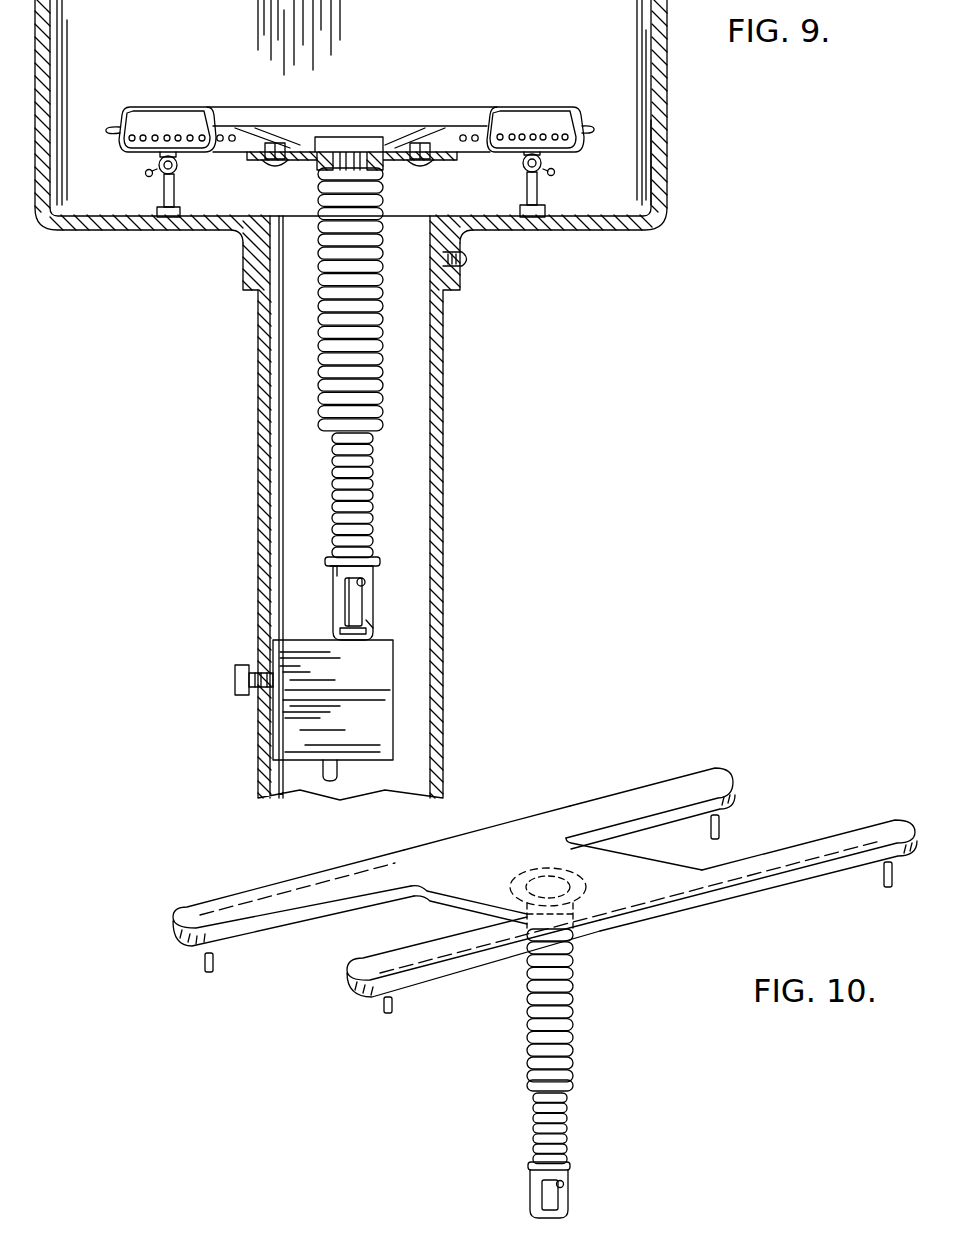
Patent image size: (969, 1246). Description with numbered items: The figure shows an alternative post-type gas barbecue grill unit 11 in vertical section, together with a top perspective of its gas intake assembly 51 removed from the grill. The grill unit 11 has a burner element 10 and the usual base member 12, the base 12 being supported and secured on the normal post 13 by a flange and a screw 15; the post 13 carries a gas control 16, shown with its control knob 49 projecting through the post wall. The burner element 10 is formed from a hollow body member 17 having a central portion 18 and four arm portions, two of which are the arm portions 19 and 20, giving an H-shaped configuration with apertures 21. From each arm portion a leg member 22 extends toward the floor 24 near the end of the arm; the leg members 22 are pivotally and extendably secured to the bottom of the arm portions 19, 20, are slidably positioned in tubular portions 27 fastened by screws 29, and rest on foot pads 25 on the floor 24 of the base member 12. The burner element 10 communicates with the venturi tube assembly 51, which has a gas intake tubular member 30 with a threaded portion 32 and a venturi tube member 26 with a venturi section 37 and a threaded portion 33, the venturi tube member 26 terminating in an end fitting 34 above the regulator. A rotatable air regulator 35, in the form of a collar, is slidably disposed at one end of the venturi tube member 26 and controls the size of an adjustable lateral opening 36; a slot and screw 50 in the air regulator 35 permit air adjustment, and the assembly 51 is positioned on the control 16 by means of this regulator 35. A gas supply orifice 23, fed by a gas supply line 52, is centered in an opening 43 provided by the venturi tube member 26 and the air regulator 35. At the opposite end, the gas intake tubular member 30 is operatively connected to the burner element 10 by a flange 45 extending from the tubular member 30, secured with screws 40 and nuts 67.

In FIG. 9, the burner element 10 is at (346, 162).
In FIG. 10, the burner element 10 is at (552, 894).
In FIG. 9, the gas barbecue grill unit 11 is at (674, 116).
In FIG. 9, the base member 12 is at (660, 167).
In FIG. 9, the post 13 is at (445, 390).
In FIG. 9, the screw 15 is at (466, 262).
In FIG. 9, the gas control 16 is at (395, 692).
In FIG. 9, the hollow body member 17 is at (563, 108).
In FIG. 9, the central portion 18 is at (455, 107).
In FIG. 10, the central portion 18 is at (490, 857).
In FIG. 9, the arm portion 19 is at (196, 108).
In FIG. 10, the arm portion 19 is at (240, 897).
In FIG. 9, the arm portion 20 is at (537, 107).
In FIG. 10, the arm portion 20 is at (368, 958).
In FIG. 9, the apertures 21 is at (128, 146).
In FIG. 9, the leg member 22 is at (176, 190).
In FIG. 10, the leg member 22 is at (206, 971).
In FIG. 9, the gas supply orifice 23 is at (385, 627).
In FIG. 9, the floor 24 is at (238, 213).
In FIG. 9, the foot pad 25 is at (165, 217).
In FIG. 9, the venturi tube member 26 is at (351, 495).
In FIG. 10, the venturi tube member 26 is at (546, 1128).
In FIG. 9, the tubular portion 27 is at (180, 166).
In FIG. 9, the screw 29 is at (146, 174).
In FIG. 9, the gas intake tubular member 30 is at (349, 363).
In FIG. 9, the threaded portion 32 is at (320, 306).
In FIG. 10, the threaded portion 32 is at (573, 991).
In FIG. 9, the threaded portion 33 is at (333, 485).
In FIG. 10, the threaded portion 33 is at (567, 1119).
In FIG. 9, the flange fitting 34 is at (373, 565).
In FIG. 9, the air regulator 35 is at (333, 598).
In FIG. 10, the air regulator 35 is at (570, 1201).
In FIG. 9, the lateral opening 36 is at (364, 601).
In FIG. 10, the lateral opening 36 is at (544, 1201).
In FIG. 9, the venturi section 37 is at (330, 570).
In FIG. 9, the screws 40 is at (268, 164).
In FIG. 9, the opening 43 is at (340, 632).
In FIG. 9, the flange 45 is at (310, 164).
In FIG. 10, the flange 45 is at (588, 897).
In FIG. 9, the control knob 49 is at (236, 691).
In FIG. 9, the screw 50 is at (372, 582).
In FIG. 9, the gas intake assembly 51 is at (301, 299).
In FIG. 10, the gas intake assembly 51 is at (577, 997).
In FIG. 9, the gas supply line 52 is at (330, 781).
In FIG. 9, the nuts 67 is at (280, 151).